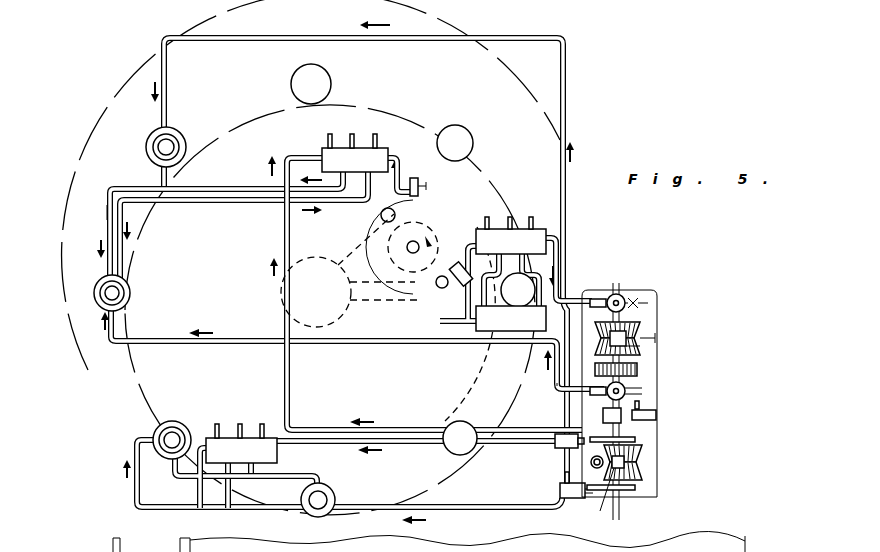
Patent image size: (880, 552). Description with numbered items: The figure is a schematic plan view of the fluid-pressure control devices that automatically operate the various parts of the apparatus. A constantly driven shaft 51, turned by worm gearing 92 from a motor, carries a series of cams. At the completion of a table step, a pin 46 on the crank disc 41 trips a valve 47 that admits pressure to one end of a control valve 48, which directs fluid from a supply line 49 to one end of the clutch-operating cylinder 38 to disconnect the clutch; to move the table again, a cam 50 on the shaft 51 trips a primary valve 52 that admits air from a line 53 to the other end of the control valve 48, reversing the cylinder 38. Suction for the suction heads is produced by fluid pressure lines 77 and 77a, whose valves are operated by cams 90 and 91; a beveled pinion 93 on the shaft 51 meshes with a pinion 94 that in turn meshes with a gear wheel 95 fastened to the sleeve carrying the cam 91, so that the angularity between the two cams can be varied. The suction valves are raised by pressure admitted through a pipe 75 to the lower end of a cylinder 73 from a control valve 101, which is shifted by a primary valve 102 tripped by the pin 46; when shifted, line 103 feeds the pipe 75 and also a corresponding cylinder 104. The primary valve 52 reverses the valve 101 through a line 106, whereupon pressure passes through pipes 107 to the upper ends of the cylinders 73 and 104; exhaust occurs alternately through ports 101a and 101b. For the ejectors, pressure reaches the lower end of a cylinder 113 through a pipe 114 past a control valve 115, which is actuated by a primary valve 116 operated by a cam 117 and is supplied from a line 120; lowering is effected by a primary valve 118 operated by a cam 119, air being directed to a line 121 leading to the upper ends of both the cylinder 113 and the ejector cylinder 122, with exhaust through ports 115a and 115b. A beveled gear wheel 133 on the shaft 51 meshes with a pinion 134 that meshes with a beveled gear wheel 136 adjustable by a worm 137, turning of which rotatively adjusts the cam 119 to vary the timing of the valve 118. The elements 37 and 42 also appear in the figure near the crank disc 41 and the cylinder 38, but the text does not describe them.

The conduit 37 is at (442, 322).
The clutch-operating cylinder 38 is at (500, 326).
The crank disc 41 is at (396, 244).
The pump inlet 42 is at (381, 215).
The pin 46 is at (436, 288).
The valve 47 is at (458, 286).
The control valve 48 is at (546, 232).
The supply line 49 is at (531, 216).
The cam 50 is at (603, 414).
The shaft 51 is at (622, 511).
The primary valve 52 is at (657, 414).
The line 53 is at (640, 404).
The cylinder 73 is at (95, 299).
The pipe 75 is at (107, 212).
The fluid pressure line 77 is at (340, 344).
The fluid pressure line 77a is at (538, 37).
The cam 90 is at (560, 387).
The cam 91 is at (604, 298).
The worm gearing 92 is at (640, 370).
The beveled pinion 93 is at (636, 350).
The pinion 94 is at (641, 338).
The gear wheel 95 is at (636, 326).
The control valve 101 is at (322, 152).
The exhaust port 101a is at (331, 134).
The exhaust port 101b is at (376, 136).
The primary valve 102 is at (414, 178).
The fluid pressure line 103 is at (353, 134).
The cylinder 104 is at (148, 140).
The line 106 is at (283, 240).
The pipes 107 is at (160, 176).
The cylinder 113 is at (153, 437).
The pipe 114 is at (136, 499).
The control valve 115 is at (210, 436).
The exhaust port 115a is at (218, 424).
The exhaust port 115b is at (263, 424).
The primary valve 116 is at (560, 489).
The cam 117 is at (640, 488).
The primary valve 118 is at (555, 446).
The cam 119 is at (636, 438).
The line 120 is at (240, 424).
The line 121 is at (319, 478).
The ejector cylinder 122 is at (338, 500).
The beveled gear wheel 133 is at (600, 511).
The pinion 134 is at (640, 462).
The beveled gear wheel 136 is at (642, 449).
The worm 137 is at (590, 461).